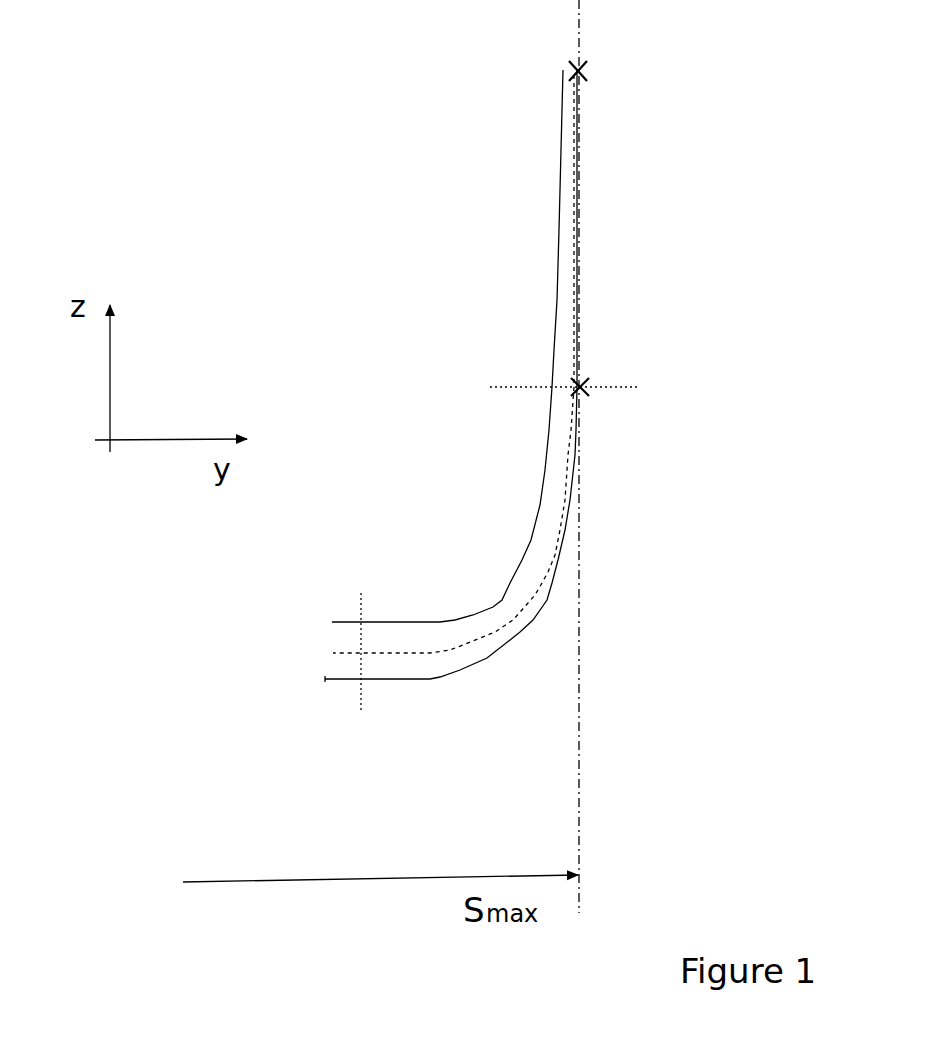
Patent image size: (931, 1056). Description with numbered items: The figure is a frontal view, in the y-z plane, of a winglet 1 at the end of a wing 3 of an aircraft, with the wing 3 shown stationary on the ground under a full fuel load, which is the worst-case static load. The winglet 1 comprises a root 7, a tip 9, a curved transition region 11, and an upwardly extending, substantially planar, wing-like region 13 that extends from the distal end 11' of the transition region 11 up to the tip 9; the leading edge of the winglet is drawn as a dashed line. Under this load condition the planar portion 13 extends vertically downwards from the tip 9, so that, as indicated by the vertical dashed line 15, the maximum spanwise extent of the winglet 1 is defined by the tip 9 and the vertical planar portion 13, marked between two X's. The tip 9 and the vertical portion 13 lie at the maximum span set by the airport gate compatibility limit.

The winglet 1 is at (447, 203).
The wing 3 is at (323, 681).
The root 7 is at (370, 715).
The tip 9 is at (567, 72).
The curved transition region 11 is at (517, 372).
The distal end of the transition region 11' is at (621, 427).
The planar wing-like region 13 is at (576, 270).
The vertical dashed line 15 is at (586, 733).